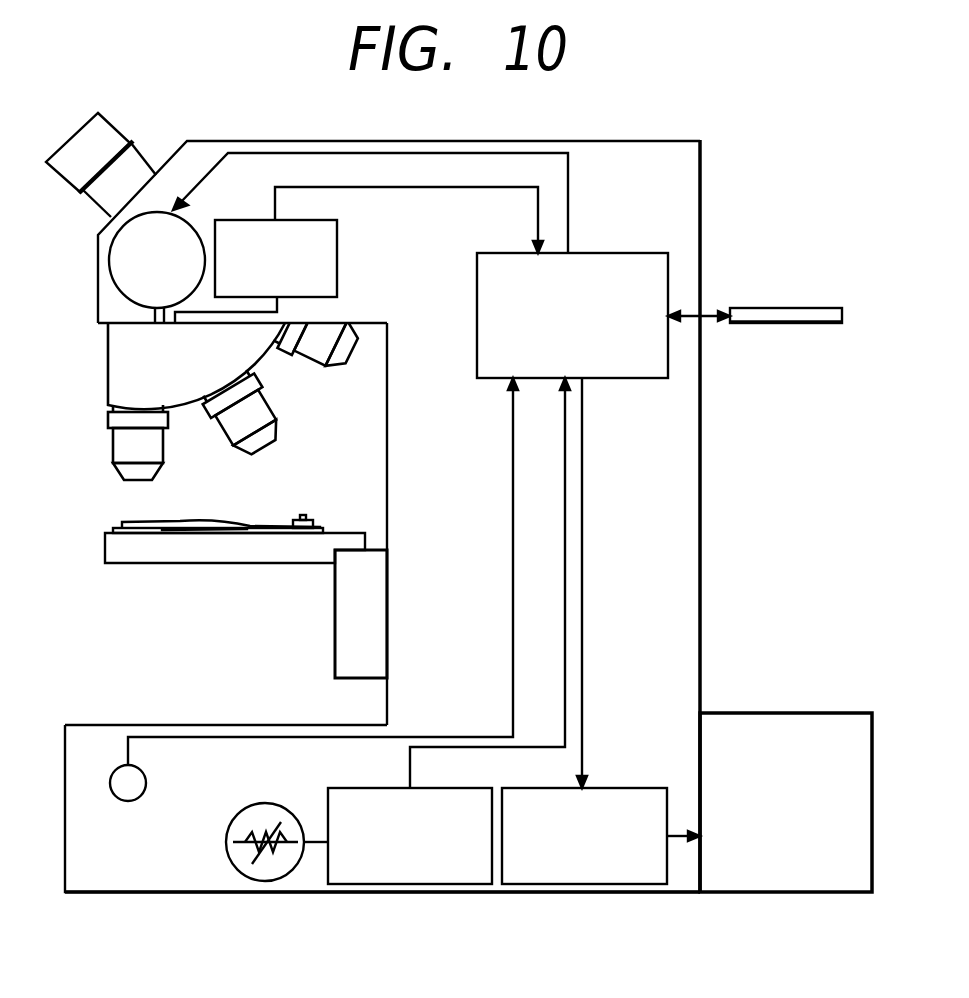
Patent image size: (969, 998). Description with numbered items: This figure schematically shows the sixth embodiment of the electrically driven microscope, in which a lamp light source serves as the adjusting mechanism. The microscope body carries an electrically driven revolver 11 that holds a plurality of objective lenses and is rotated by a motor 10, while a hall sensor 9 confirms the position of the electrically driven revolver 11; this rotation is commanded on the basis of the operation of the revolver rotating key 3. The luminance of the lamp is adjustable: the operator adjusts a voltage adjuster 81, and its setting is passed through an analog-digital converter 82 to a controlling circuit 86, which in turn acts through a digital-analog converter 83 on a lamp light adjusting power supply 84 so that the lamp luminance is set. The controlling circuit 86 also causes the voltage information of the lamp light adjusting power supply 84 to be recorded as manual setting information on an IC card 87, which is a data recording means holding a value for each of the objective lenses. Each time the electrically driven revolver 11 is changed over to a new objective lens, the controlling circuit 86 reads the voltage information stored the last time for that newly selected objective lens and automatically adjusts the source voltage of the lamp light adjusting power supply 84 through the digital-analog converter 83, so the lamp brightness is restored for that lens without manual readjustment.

The revolver rotating key 3 is at (111, 777).
The hall sensor 9 is at (337, 238).
The motor 10 is at (108, 261).
The electrically driven revolver 11 is at (120, 375).
The voltage adjuster 81 is at (272, 881).
The analog-digital converter 82 is at (470, 884).
The digital-analog converter 83 is at (630, 884).
The lamp light adjusting power supply 84 is at (828, 892).
The controlling circuit 86 is at (650, 253).
The IC card 87 is at (818, 308).